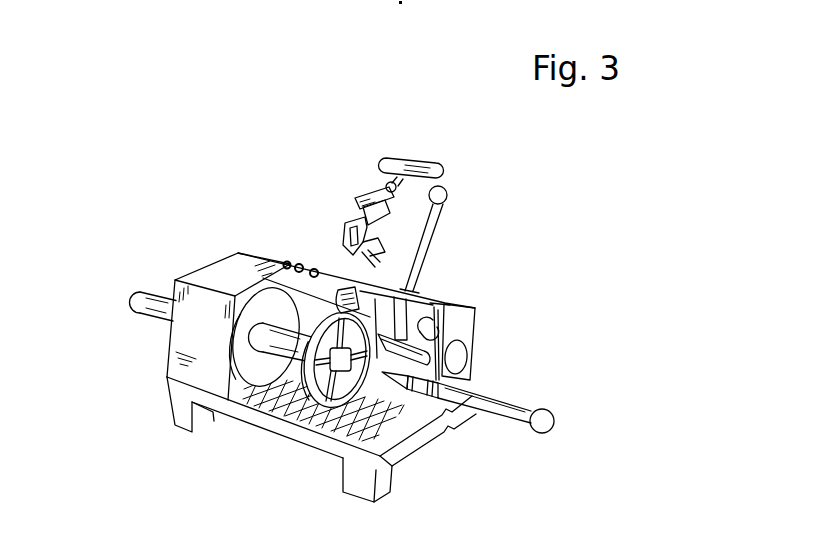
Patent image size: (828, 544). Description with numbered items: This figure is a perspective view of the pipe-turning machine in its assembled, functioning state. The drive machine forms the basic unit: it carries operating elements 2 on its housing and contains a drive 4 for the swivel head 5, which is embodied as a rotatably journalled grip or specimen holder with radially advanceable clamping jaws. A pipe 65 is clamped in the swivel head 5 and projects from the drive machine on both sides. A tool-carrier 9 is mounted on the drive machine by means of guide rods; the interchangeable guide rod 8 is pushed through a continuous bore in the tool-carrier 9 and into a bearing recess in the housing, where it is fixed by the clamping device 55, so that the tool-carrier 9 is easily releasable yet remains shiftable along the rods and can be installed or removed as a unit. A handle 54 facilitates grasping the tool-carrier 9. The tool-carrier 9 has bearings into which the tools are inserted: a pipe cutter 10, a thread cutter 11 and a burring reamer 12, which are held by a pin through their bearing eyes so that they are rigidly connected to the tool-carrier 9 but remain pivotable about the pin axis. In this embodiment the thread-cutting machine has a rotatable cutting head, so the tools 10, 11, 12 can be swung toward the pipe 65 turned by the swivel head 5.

The operating elements 2 is at (316, 269).
The drive 4 is at (206, 265).
The swivel head 5 is at (242, 375).
The guide rod 8 is at (337, 289).
The tool-carrier 9 is at (428, 298).
The pipe cutter 10 is at (350, 166).
The thread cutter 11 is at (312, 372).
The burring reamer 12 is at (402, 374).
The handle 54 is at (447, 190).
The clamping device 55 is at (453, 302).
The pipe 65 is at (142, 306).